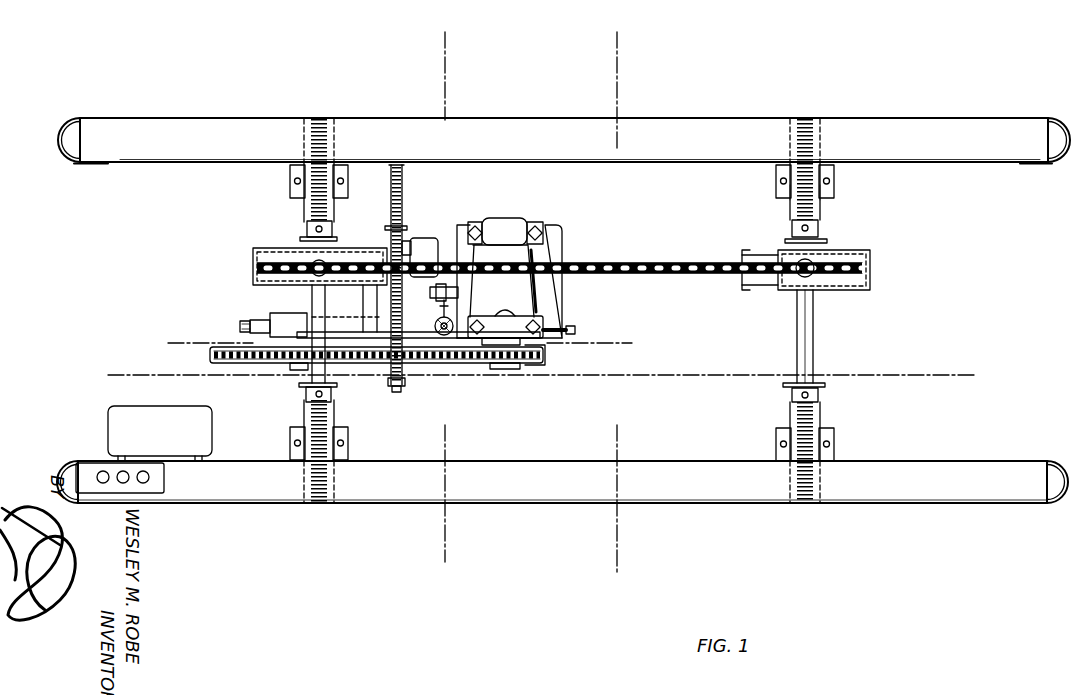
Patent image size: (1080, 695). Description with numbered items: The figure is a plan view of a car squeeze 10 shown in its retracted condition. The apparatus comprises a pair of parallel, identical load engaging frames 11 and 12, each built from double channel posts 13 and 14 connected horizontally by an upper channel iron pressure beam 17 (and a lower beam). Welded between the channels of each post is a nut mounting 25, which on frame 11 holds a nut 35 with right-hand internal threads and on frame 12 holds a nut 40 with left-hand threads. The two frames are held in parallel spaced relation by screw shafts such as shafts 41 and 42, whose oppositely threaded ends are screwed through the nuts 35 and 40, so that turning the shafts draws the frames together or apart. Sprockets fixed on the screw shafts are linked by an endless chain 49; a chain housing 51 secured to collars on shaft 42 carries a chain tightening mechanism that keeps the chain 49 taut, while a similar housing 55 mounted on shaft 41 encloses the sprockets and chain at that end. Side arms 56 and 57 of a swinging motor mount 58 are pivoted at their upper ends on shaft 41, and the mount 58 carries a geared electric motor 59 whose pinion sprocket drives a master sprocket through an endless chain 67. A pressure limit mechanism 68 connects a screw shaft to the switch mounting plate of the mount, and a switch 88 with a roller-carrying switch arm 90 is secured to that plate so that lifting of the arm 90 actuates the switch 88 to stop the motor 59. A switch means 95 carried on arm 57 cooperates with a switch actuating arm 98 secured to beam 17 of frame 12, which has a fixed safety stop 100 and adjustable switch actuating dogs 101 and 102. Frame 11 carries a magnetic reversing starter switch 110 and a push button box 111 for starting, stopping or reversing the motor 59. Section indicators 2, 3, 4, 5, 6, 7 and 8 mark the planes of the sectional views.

The car squeeze 10 is at (92, 42).
The load engaging frame 11 is at (242, 490).
The load engaging frame 12 is at (203, 117).
The double channel post 13 is at (290, 189).
The double channel post 14 is at (776, 180).
The upper pressure beam 17 is at (521, 118).
The nut mounting 25 is at (828, 213).
The nut 35 is at (818, 395).
The nut 40 is at (307, 228).
The screw shaft 41 is at (312, 299).
The screw shaft 42 is at (813, 331).
The endless chain 49 is at (590, 263).
The chain housing 51 is at (870, 264).
The housing 55 is at (253, 262).
The side arm 56 is at (337, 332).
The side arm 57 is at (383, 249).
The swinging motor mount 58 is at (562, 230).
The geared electric motor 59 is at (510, 224).
The endless chain 67 is at (338, 362).
The pressure limit mechanism 68 is at (240, 327).
The switch 88 is at (458, 292).
The switch arm 90 is at (438, 320).
The switch means 95 is at (388, 238).
The switch actuating arm 98 is at (402, 211).
The safety stop 100 is at (397, 388).
The switch actuating dog 101 is at (405, 234).
The switch actuating dog 102 is at (405, 383).
The magnetic reversing starter switch 110 is at (108, 429).
The push button box 111 is at (148, 493).
The post 5 is at (812, 359).
The section line 2 is at (135, 377).
The section line 3 is at (620, 52).
The section line 4 is at (178, 345).
The section line 6 is at (448, 52).
The section line 7 is at (448, 553).
The section line 8 is at (618, 345).